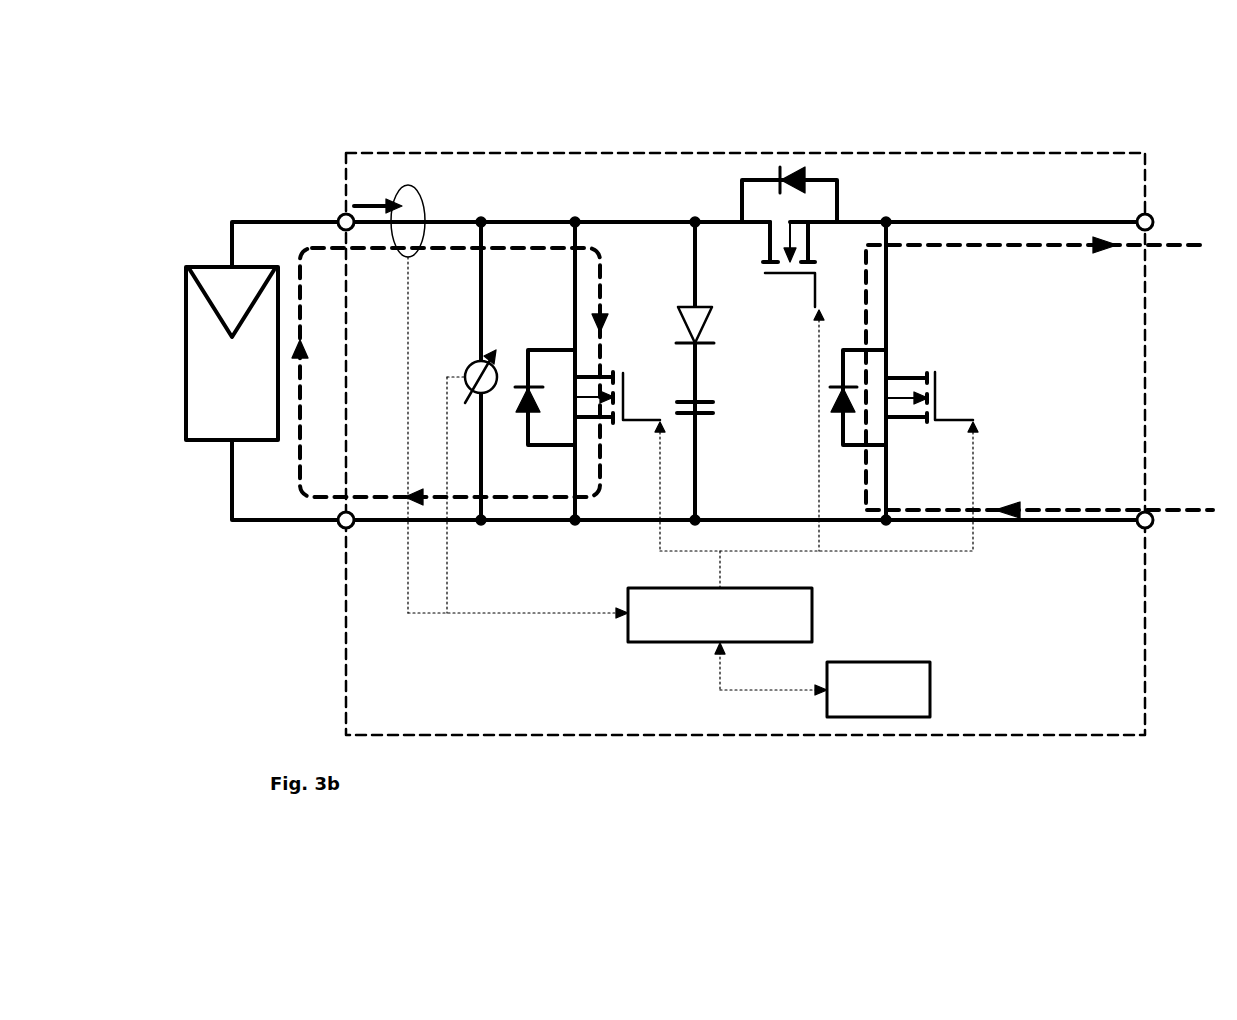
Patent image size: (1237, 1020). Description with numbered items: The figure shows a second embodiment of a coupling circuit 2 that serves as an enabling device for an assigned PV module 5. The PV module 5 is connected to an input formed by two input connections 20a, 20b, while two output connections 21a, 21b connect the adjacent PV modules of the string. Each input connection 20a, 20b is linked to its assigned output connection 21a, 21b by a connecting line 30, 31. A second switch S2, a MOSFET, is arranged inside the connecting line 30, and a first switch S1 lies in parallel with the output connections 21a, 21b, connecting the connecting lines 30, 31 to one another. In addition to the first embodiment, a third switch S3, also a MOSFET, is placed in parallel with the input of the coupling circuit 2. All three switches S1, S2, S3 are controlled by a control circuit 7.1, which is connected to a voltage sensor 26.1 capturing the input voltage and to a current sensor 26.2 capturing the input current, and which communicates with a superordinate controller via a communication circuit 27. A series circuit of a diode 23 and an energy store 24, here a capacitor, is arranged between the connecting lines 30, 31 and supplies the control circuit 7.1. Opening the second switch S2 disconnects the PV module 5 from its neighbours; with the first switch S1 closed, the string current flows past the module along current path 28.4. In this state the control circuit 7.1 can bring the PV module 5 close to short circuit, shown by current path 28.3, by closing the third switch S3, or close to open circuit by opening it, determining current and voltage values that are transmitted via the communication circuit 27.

The coupling circuit 2 is at (338, 149).
The PV module 5 is at (220, 264).
The input connection 20a is at (339, 216).
The input connection 20b is at (340, 527).
The output connection 21a is at (1151, 216).
The output connection 21b is at (1152, 527).
The diode 23 is at (680, 308).
The energy store 24 is at (713, 407).
The voltage sensor 26.1 is at (470, 364).
The current sensor 26.2 is at (408, 185).
The communication circuit 27 is at (878, 689).
The current path 28.3 is at (400, 497).
The current path 28.4 is at (1004, 243).
The connecting line 30 is at (649, 220).
The connecting line 31 is at (423, 523).
The control circuit 7.1 is at (727, 623).
The first switch S1 is at (917, 434).
The second switch S2 is at (826, 246).
The third switch S3 is at (624, 445).